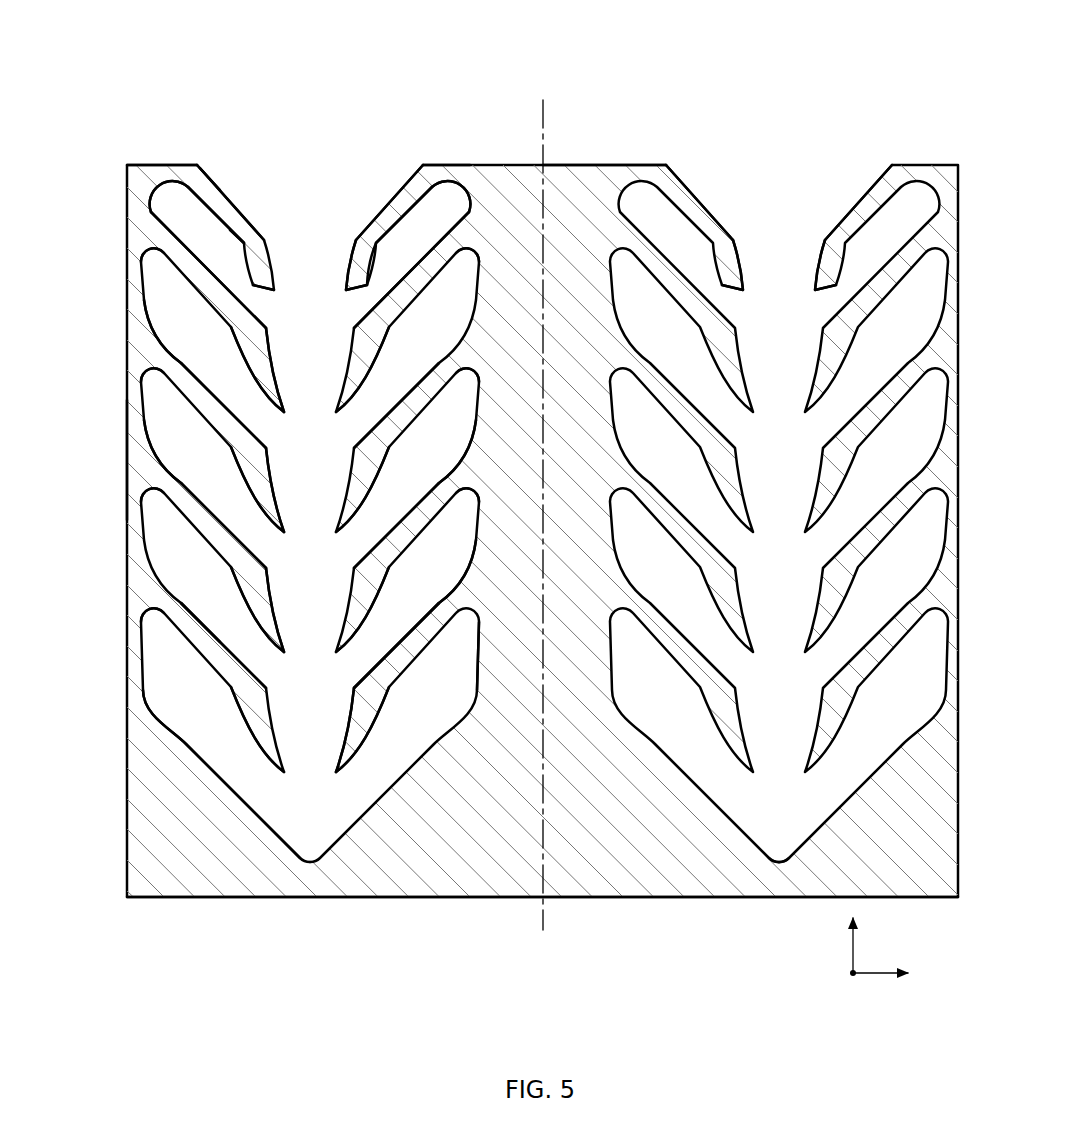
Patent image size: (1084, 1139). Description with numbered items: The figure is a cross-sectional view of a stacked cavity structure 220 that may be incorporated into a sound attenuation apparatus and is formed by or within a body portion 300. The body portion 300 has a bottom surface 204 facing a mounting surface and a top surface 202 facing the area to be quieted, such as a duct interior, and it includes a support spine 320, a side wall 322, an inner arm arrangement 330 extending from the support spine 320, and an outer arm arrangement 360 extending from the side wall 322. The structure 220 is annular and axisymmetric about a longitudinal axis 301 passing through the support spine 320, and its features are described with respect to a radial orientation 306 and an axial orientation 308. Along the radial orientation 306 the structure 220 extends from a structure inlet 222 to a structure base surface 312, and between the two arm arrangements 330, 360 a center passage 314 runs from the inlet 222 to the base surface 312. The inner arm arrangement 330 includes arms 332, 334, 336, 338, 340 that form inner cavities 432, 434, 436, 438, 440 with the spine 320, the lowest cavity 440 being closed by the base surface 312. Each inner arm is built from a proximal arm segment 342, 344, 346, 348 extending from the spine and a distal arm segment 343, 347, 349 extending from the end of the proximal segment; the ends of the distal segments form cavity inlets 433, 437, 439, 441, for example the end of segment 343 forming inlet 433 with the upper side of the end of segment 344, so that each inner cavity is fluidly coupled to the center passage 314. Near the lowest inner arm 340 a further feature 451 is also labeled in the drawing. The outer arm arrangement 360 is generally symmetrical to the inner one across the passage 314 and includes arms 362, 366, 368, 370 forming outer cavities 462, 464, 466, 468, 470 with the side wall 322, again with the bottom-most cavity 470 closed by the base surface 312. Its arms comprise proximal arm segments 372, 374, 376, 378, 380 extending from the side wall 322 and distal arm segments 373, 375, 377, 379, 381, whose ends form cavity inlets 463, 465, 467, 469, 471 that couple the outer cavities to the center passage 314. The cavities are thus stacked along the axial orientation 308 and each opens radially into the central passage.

The stacked cavity structure 220 is at (136, 92).
The body portion 300 is at (130, 830).
The longitudinal axis 301 is at (548, 112).
The bottom surface 204 is at (197, 898).
The top surface 202 is at (664, 166).
The structure inlet 222 is at (782, 168).
The support spine 320 is at (593, 170).
The side wall 322 is at (143, 470).
The center passage 314 is at (778, 278).
The structure base surface 312 is at (843, 826).
The radial orientation 306 is at (848, 948).
The axial orientation 308 is at (862, 985).
The inner arm arrangement 330 is at (401, 172).
The inner arm 332 is at (358, 258).
The inner arm 334 is at (440, 322).
The inner arm 336 is at (400, 414).
The inner arm 338 is at (427, 512).
The inner arm 340 is at (392, 690).
The proximal arm segment 342 is at (381, 196).
The distal arm segment 343 is at (353, 265).
The proximal arm segment 344 is at (425, 242).
The proximal arm segment 346 is at (468, 408).
The distal arm segment 347 is at (352, 480).
The proximal arm segment 348 is at (428, 567).
The distal arm segment 349 is at (346, 592).
The outer arm arrangement 360 is at (231, 184).
The outer arm 362 is at (257, 205).
The outer arm 366 is at (235, 418).
The outer arm 368 is at (238, 533).
The outer arm 370 is at (235, 654).
The proximal arm segment 372 is at (200, 167).
The distal arm segment 373 is at (270, 238).
The proximal arm segment 374 is at (215, 290).
The distal arm segment 375 is at (265, 360).
The proximal arm segment 376 is at (180, 355).
The distal arm segment 377 is at (280, 490).
The proximal arm segment 378 is at (177, 480).
The distal arm segment 379 is at (277, 608).
The proximal arm segment 380 is at (193, 636).
The distal arm segment 381 is at (248, 724).
The inner cavity 432 is at (455, 178).
The cavity inlet 433 is at (348, 296).
The inner cavity 434 is at (466, 320).
The inner cavity 436 is at (472, 445).
The cavity inlet 437 is at (362, 540).
The inner cavity 438 is at (478, 556).
The cavity inlet 439 is at (385, 645).
The inner cavity 440 is at (470, 700).
The cavity inlet 441 is at (333, 795).
The fin tail 451 is at (352, 742).
The outer cavity 462 is at (160, 207).
The cavity inlet 463 is at (260, 293).
The outer cavity 464 is at (162, 316).
The cavity inlet 465 is at (280, 425).
The outer cavity 466 is at (152, 425).
The cavity inlet 467 is at (240, 550).
The outer cavity 468 is at (150, 514).
The cavity inlet 469 is at (257, 660).
The outer cavity 470 is at (147, 636).
The cavity inlet 471 is at (252, 781).